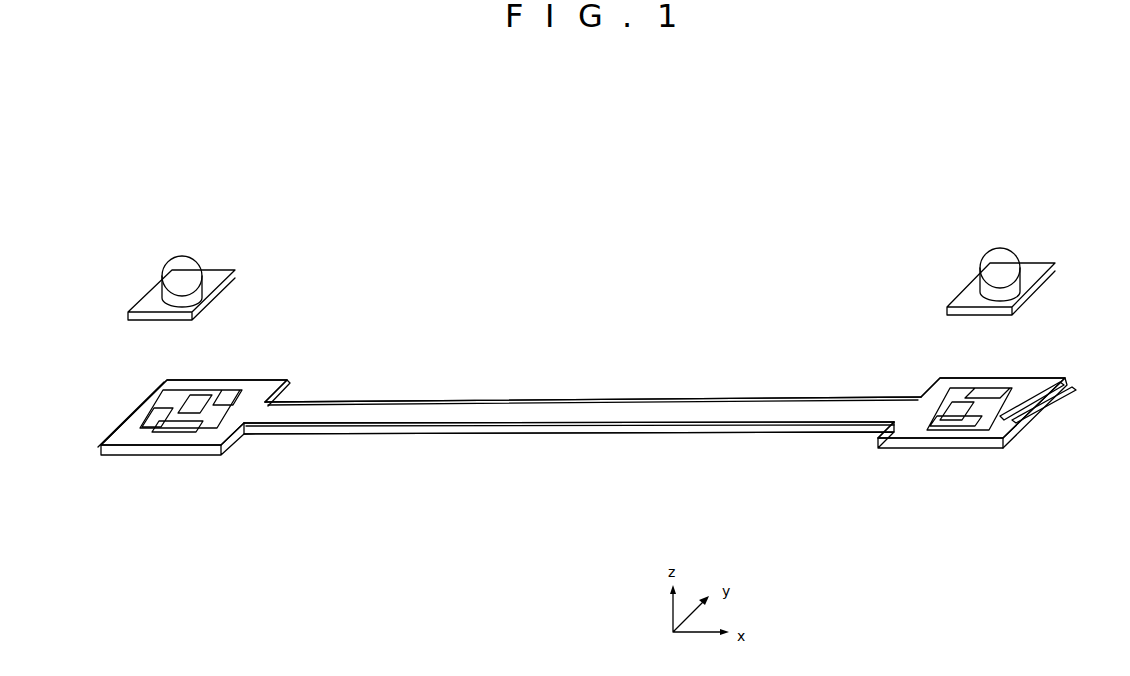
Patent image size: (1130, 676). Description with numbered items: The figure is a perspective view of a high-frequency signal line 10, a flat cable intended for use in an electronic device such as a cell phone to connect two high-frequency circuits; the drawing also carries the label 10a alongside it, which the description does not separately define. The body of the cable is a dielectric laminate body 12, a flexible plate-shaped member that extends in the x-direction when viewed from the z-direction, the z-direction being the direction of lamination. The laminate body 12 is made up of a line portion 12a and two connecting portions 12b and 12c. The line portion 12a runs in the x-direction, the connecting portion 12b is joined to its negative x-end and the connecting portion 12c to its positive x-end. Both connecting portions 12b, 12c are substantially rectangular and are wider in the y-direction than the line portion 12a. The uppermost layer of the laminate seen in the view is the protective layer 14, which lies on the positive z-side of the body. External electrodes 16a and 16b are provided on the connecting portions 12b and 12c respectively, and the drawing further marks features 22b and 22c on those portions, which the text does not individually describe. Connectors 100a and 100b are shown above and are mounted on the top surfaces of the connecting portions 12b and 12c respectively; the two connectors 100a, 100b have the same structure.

The high-frequency signal line 10 is at (297, 131).
The sensor device 10a is at (607, 360).
The dielectric laminate body 12 is at (553, 449).
The line portion 12a is at (628, 436).
The connecting portion 12b is at (112, 456).
The connecting portion 12c is at (989, 448).
The protective layer 14 is at (617, 408).
The external electrode 16a is at (212, 408).
The external electrode 16b is at (951, 402).
The terminal electrodes 22b is at (190, 395).
The terminal electrodes 22c is at (1071, 387).
The connector 100a is at (182, 256).
The connector 100b is at (998, 249).